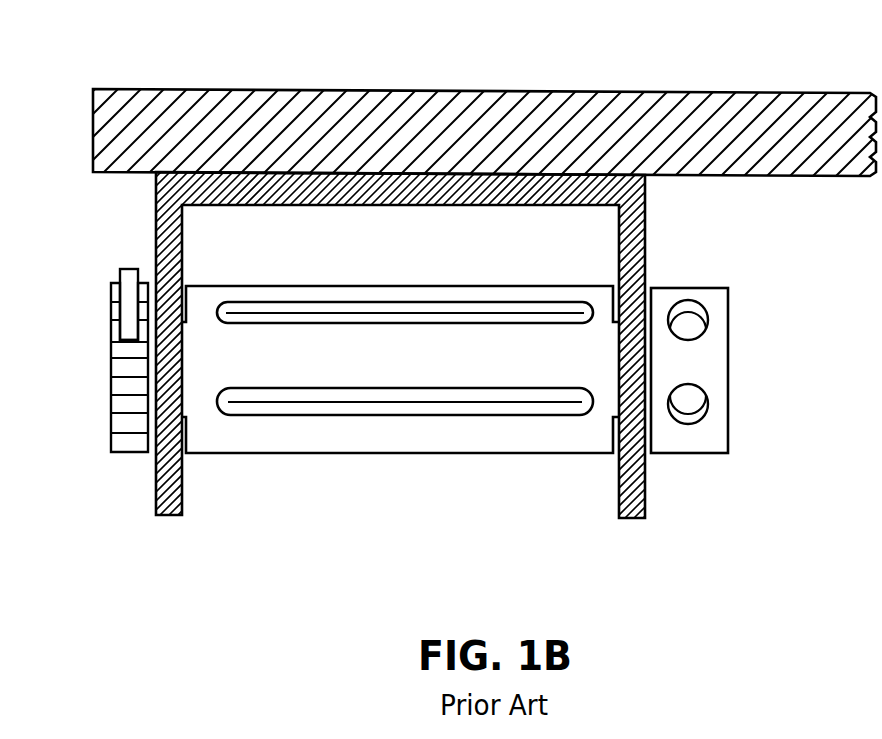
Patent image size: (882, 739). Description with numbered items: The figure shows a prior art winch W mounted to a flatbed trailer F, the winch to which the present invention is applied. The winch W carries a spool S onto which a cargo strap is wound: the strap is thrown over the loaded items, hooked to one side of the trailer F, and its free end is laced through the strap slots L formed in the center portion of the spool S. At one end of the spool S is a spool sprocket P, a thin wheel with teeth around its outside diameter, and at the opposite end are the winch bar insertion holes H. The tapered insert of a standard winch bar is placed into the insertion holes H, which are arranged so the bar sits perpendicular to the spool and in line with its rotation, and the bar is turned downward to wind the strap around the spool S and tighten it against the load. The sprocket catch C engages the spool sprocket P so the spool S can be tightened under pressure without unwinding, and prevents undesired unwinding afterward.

The flatbed trailer F is at (633, 92).
The winch W is at (190, 565).
The spool S is at (544, 283).
The strap slots L is at (440, 417).
The winch bar insertion holes H is at (693, 328).
The spool sprocket P is at (128, 454).
The sprocket catch C is at (127, 268).